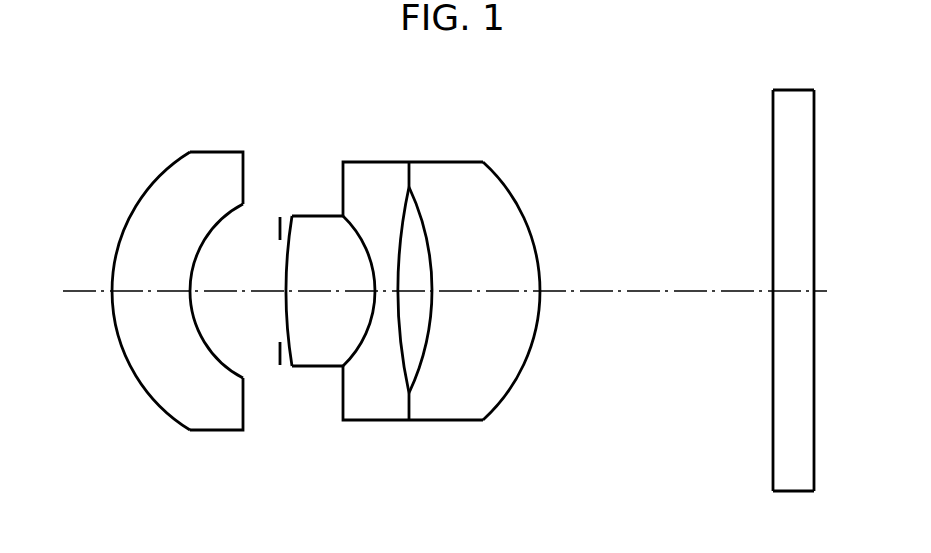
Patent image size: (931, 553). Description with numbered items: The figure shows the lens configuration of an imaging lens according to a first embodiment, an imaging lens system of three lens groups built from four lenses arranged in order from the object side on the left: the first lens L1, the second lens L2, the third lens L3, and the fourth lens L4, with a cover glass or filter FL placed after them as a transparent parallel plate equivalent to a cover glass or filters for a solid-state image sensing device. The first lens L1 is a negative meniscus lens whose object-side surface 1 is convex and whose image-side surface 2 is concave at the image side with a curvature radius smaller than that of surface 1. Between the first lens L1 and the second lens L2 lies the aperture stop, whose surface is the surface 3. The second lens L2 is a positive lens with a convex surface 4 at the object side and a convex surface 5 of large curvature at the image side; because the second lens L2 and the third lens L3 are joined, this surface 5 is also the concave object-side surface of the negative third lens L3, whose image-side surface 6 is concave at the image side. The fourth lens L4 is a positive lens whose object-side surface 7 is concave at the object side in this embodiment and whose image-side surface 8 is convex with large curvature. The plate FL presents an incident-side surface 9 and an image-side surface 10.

The first lens L1 is at (191, 291).
The surface 1 is at (162, 408).
The surface 2 is at (240, 366).
The surface 3 is at (277, 223).
The second lens L2 is at (326, 312).
The surface 4 is at (286, 367).
The surface 5 is at (360, 353).
The third lens L3 is at (391, 285).
The surface 6 is at (405, 380).
The surface 7 is at (416, 380).
The fourth lens L4 is at (474, 285).
The surface 8 is at (505, 398).
The cover glass or filter FL is at (796, 281).
The surface 9 is at (772, 462).
The surface 10 is at (816, 462).